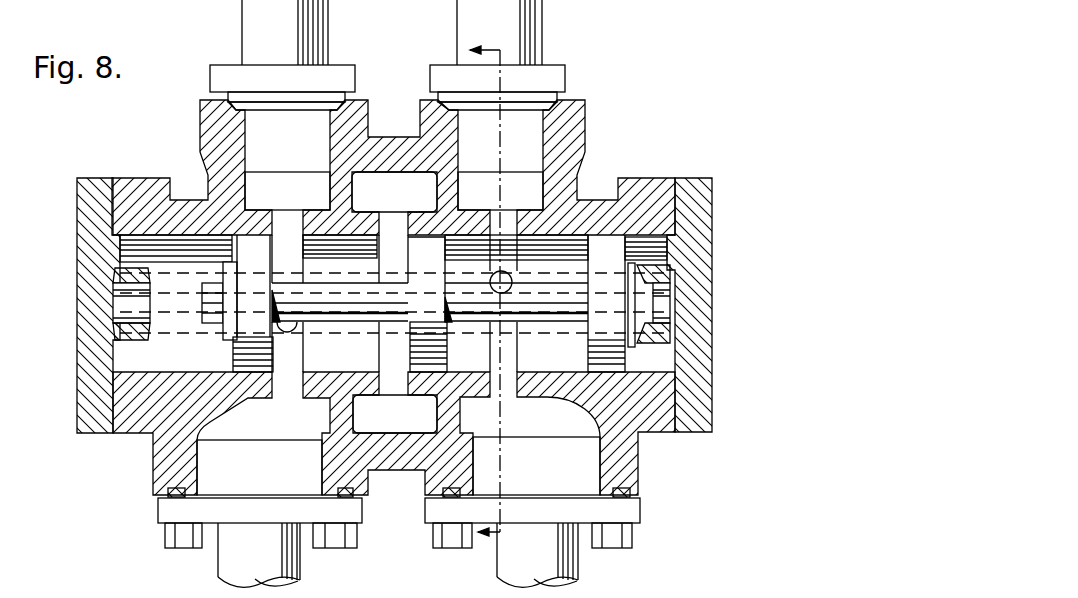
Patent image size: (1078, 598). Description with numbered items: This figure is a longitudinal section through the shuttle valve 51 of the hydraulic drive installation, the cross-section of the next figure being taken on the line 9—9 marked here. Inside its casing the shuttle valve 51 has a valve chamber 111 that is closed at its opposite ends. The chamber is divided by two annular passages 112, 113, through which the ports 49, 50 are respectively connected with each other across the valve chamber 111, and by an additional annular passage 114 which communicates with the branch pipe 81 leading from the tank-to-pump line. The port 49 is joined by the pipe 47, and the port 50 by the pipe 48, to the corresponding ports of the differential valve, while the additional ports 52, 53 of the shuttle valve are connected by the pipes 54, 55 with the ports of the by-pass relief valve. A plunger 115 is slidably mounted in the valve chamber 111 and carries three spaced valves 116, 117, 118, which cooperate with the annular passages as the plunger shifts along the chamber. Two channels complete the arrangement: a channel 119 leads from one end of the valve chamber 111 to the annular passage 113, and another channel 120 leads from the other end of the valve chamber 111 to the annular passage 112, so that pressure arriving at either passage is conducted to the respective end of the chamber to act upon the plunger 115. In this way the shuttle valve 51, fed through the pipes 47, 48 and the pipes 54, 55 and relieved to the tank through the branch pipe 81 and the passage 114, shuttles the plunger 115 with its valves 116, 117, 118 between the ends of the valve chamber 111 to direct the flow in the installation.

The section line 9— 9 is at (495, 288).
The pipe 47 is at (242, 14).
The pipe 48 is at (533, 23).
The port 49 is at (287, 166).
The port 50 is at (500, 166).
The shuttle valve 51 is at (188, 200).
The port 52 is at (259, 467).
The port 53 is at (536, 466).
The pipe 54 is at (224, 563).
The pipe 55 is at (538, 565).
The branch pipe 81 is at (334, 597).
The valve chamber 111 is at (135, 355).
The annular passage 112 is at (292, 353).
The annular passage 113 is at (503, 352).
The annular passage 114 is at (394, 372).
The plunger 115 is at (395, 303).
The valve 116 is at (250, 344).
The valve 117 is at (592, 267).
The valve 118 is at (412, 240).
The channel 119 is at (176, 290).
The channel 120 is at (466, 330).